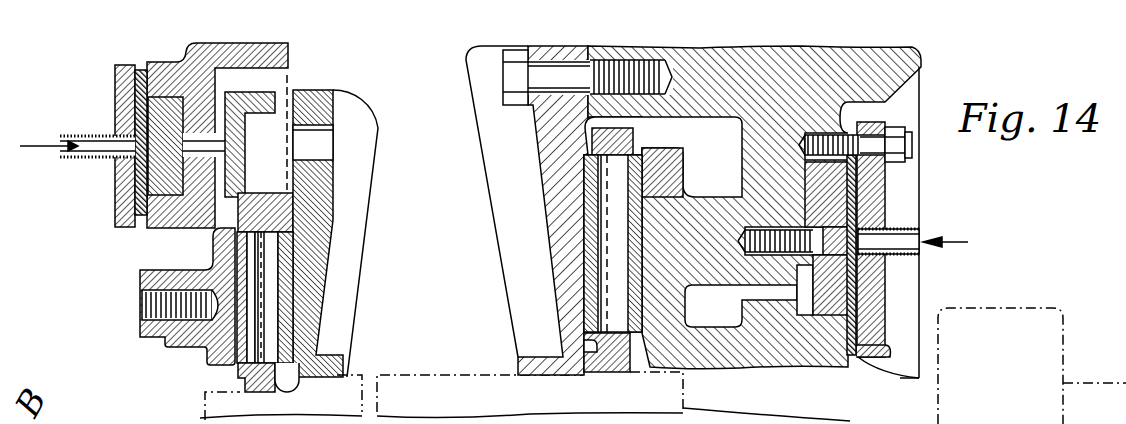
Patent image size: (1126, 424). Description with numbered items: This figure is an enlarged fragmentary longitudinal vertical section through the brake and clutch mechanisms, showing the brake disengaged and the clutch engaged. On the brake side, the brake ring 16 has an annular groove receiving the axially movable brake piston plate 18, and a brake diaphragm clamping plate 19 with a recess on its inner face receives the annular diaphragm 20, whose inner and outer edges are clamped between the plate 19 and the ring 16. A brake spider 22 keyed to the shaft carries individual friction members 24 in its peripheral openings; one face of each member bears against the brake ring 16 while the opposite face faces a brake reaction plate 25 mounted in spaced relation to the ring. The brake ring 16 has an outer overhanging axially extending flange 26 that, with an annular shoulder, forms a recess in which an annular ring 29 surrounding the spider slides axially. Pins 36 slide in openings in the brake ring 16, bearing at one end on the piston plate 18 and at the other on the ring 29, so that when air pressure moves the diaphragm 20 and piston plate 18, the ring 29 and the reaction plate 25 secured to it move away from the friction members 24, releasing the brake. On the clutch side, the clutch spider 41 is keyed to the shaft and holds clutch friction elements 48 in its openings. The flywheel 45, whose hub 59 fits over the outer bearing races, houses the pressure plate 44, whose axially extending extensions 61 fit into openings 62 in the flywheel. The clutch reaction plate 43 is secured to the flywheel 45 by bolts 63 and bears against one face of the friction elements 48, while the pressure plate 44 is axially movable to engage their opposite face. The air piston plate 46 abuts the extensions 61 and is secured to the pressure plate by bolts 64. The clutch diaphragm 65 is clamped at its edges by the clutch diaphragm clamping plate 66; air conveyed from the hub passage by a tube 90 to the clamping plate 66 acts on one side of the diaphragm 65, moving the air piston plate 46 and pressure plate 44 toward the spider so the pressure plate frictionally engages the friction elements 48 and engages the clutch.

The brake ring 16 is at (142, 275).
The brake piston plate 18 is at (152, 172).
The brake diaphragm clamping plate 19 is at (118, 93).
The annular diaphragm 20 is at (140, 116).
The brake spider 22 is at (262, 392).
The friction members 24 is at (282, 340).
The brake reaction plate 25 is at (320, 283).
The outer overhanging axially extending flange 26 is at (289, 52).
The annular ring 29 is at (267, 132).
The pins 36 is at (238, 150).
The clutch spider 41 is at (613, 365).
The clutch reaction plate 43 is at (506, 254).
The pressure plate 44 is at (690, 154).
The flywheel 45 is at (903, 72).
The air piston plate 46 is at (838, 300).
The friction elements 48 is at (586, 213).
The flywheel hub 59 is at (780, 352).
The axially extending extensions 61 is at (722, 199).
The openings 62 is at (741, 291).
The bolts 63 is at (547, 80).
The bolts 64 is at (876, 207).
The clutch diaphragm 65 is at (857, 285).
The clutch diaphragm clamping plate 66 is at (877, 268).
The tube 90 is at (913, 229).